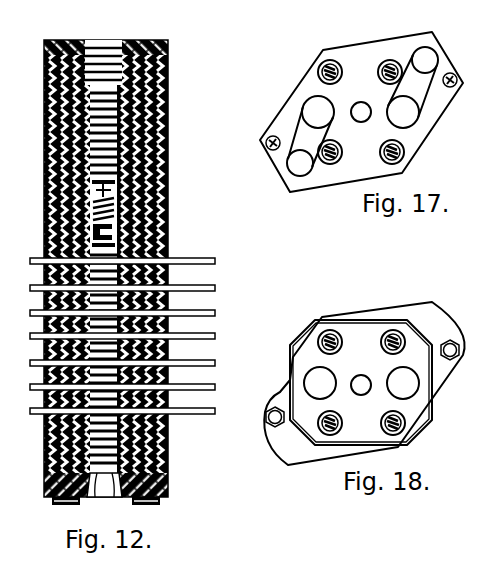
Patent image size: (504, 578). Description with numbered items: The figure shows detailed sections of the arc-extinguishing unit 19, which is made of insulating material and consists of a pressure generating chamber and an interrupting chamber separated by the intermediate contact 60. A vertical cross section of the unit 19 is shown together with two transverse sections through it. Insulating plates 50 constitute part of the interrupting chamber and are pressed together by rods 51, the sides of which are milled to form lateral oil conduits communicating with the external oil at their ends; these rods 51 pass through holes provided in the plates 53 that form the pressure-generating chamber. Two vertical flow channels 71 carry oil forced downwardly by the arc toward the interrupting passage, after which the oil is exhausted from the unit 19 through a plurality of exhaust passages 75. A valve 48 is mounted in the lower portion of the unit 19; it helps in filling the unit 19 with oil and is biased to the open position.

In FIG. 12, the arc-extinguishing unit 19 is at (32, 227).
In FIG. 12, the valve 48 is at (111, 480).
In FIG. 17, the insulating plates 50 is at (393, 47).
In FIG. 18, the insulating plates 50 is at (432, 317).
In FIG. 17, the rods 51 is at (402, 158).
In FIG. 18, the plates 53 is at (310, 352).
In FIG. 12, the intermediate contact 60 is at (168, 232).
In FIG. 17, the vertical flow channels 71 is at (312, 100).
In FIG. 18, the vertical flow channels 71 is at (310, 377).
In FIG. 12, the exhaust passages 75 is at (216, 312).